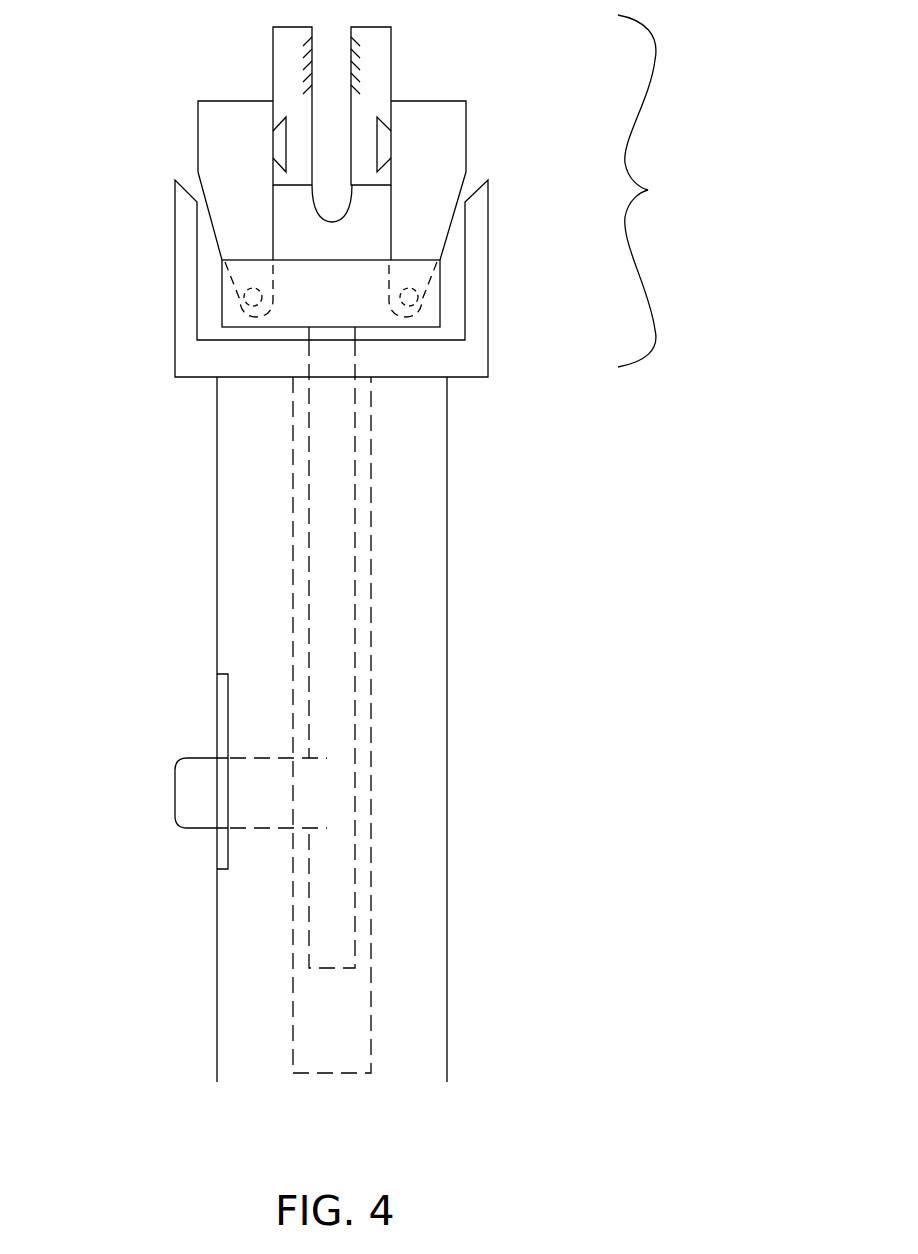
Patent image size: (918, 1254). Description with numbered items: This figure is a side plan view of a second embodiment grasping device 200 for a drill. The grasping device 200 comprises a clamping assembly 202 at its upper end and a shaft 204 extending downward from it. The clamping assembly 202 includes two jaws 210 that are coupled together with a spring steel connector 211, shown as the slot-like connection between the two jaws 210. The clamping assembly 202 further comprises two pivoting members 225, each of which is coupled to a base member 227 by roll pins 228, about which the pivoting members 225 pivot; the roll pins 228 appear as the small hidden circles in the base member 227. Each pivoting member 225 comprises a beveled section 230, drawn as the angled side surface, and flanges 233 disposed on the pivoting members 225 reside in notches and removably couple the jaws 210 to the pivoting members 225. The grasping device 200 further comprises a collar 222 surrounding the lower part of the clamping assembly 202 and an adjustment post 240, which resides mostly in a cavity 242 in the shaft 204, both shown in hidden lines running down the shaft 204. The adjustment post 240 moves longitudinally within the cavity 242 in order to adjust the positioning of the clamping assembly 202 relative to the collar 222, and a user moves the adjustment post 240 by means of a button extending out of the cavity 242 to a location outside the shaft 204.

The grasping device 200 is at (681, 428).
The clamping assembly 202 is at (648, 190).
The shaft 204 is at (447, 592).
The jaws 210 is at (272, 42).
The spring steel connector 211 is at (332, 222).
The collar 222 is at (175, 364).
The pivoting members 225 is at (198, 115).
The base member 227 is at (222, 298).
The roll pins 228 is at (418, 297).
The beveled section 230 is at (212, 218).
The flanges 233 is at (280, 147).
The adjustment post 240 is at (355, 522).
The cavity 242 is at (372, 1015).